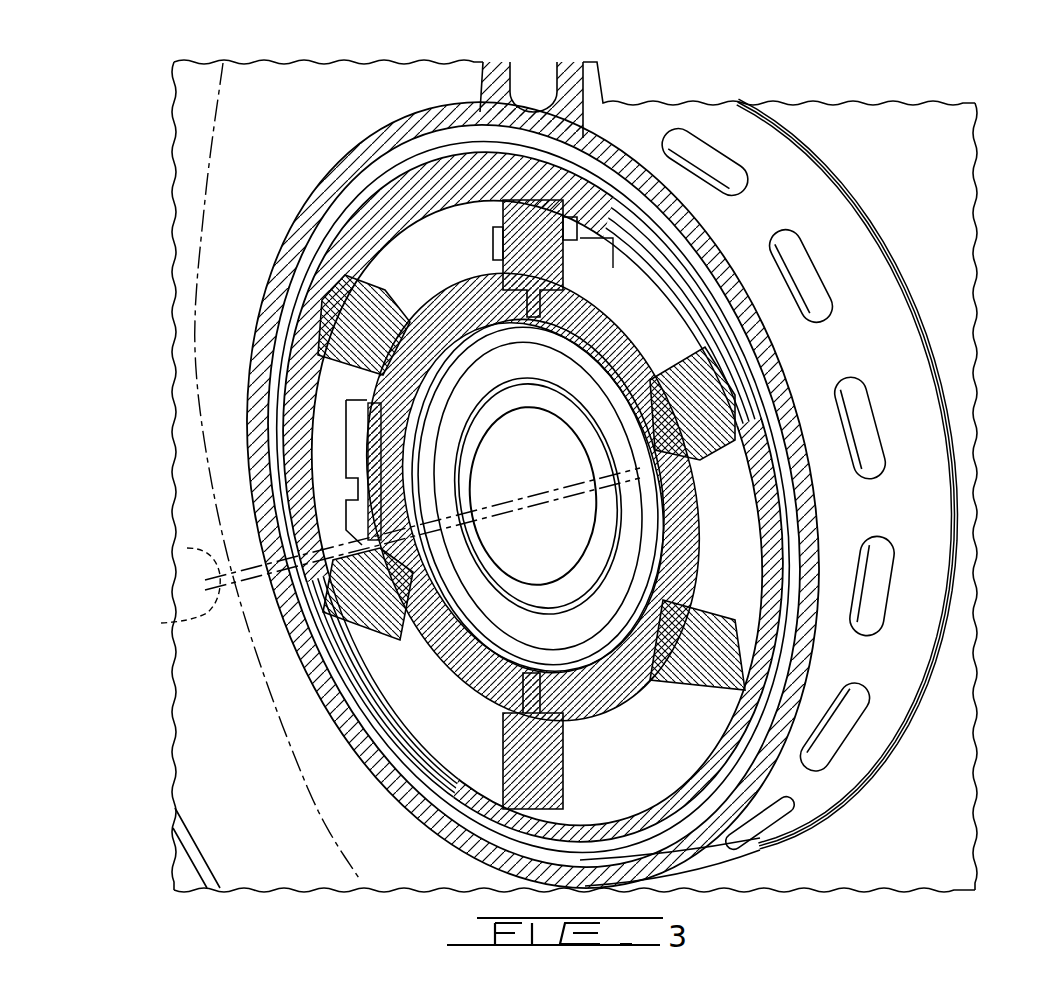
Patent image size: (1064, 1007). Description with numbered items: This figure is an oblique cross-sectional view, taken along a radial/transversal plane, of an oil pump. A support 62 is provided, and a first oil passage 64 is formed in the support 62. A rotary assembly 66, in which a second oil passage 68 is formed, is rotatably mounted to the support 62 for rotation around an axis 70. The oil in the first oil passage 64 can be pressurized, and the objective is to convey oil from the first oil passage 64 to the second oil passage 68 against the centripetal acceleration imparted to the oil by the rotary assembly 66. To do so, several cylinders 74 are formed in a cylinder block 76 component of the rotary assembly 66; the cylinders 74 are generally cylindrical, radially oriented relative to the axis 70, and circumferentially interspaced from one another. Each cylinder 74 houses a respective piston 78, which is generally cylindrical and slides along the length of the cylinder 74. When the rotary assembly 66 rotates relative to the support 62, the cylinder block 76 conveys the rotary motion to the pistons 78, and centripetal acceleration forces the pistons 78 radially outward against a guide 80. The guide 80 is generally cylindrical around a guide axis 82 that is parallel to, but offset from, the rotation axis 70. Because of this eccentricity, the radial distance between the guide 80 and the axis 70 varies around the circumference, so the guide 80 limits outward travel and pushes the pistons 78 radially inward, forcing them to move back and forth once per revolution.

The support 62 is at (305, 228).
The first oil passage 64 is at (367, 402).
The rotary assembly 66 is at (393, 453).
The second oil passage 68 is at (452, 507).
The axis 70 is at (187, 548).
The cylinder 74 is at (497, 250).
The cylinder block 76 is at (625, 308).
The piston 78 is at (735, 397).
The guide 80 is at (423, 767).
The guide axis 82 is at (180, 620).